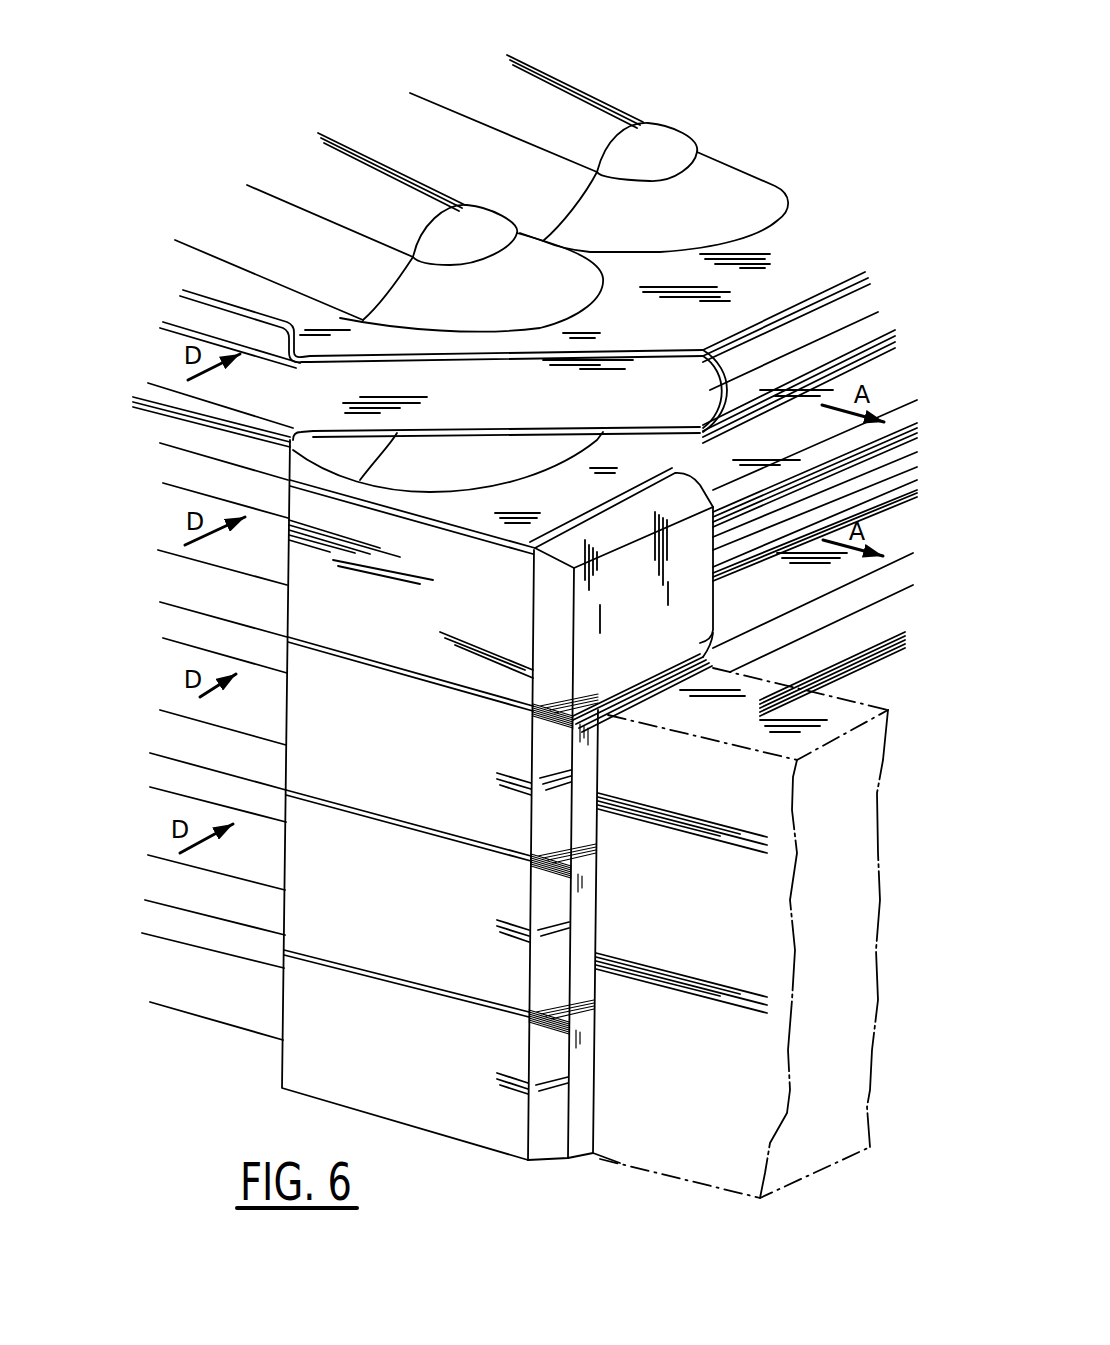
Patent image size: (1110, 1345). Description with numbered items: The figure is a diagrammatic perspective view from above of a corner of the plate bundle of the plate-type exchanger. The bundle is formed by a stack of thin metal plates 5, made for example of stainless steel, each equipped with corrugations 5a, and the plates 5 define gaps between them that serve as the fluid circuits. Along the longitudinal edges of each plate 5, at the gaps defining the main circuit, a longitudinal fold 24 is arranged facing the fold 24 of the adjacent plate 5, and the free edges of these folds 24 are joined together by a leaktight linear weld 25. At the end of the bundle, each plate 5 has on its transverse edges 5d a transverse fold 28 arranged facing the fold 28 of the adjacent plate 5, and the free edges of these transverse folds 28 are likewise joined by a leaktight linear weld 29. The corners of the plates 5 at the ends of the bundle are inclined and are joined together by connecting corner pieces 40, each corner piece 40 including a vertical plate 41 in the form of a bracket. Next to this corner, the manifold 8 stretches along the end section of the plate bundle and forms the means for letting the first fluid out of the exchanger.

The thin metal plate 5 is at (797, 233).
The corrugations 5a is at (655, 138).
The transverse edge 5d is at (770, 305).
The manifold 8 is at (698, 1145).
The longitudinal fold 24 is at (150, 425).
The leaktight linear weld 25 is at (172, 600).
The transverse fold 28 is at (863, 305).
The leaktight linear weld 29 is at (878, 332).
The connecting corner piece 40 is at (422, 634).
The vertical plate 41 is at (520, 778).